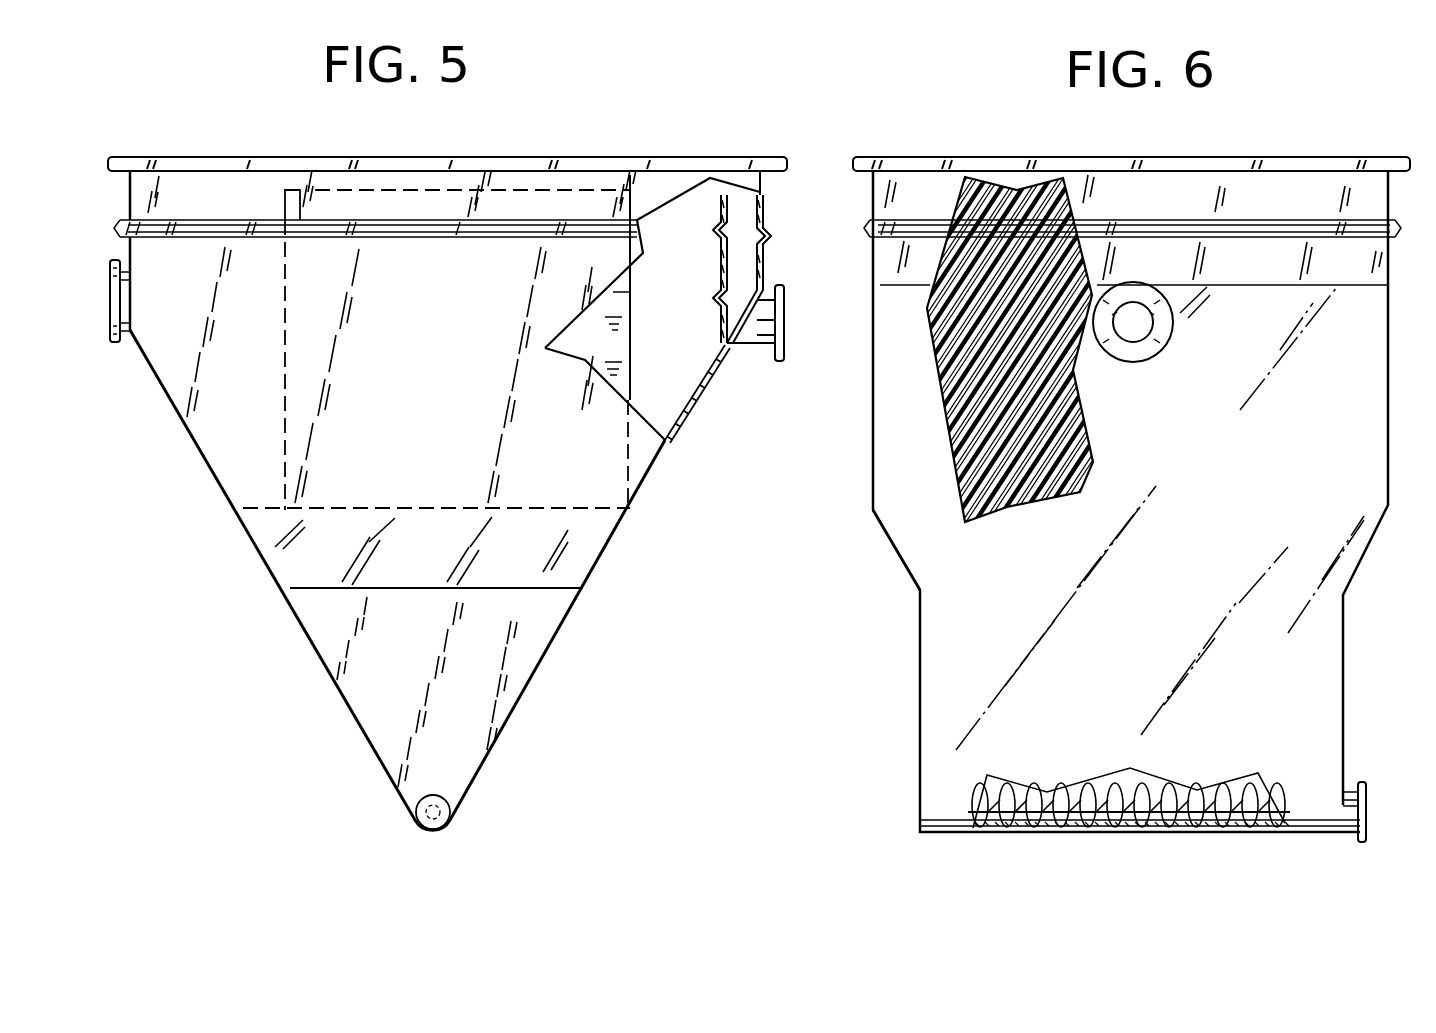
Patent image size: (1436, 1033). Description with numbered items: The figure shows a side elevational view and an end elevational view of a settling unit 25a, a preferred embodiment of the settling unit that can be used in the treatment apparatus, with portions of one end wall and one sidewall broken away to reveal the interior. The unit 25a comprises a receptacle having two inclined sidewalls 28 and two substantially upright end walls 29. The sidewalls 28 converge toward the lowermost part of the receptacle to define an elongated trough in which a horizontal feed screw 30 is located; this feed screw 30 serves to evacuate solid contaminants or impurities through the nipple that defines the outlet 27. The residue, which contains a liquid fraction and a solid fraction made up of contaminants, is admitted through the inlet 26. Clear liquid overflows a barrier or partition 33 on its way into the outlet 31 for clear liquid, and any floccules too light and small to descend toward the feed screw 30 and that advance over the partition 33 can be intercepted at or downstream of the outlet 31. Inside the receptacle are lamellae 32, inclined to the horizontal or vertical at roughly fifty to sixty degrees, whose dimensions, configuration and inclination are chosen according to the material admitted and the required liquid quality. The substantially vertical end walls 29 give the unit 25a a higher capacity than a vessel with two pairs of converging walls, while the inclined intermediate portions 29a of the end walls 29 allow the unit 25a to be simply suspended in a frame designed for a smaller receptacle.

In FIG. 5, the settling unit 25a is at (302, 796).
In FIG. 6, the settling unit 25a is at (882, 819).
In FIG. 5, the inlet 26 is at (110, 314).
In FIG. 6, the outlet 27 is at (1377, 806).
In FIG. 5, the inclined sidewall 28 is at (285, 601).
In FIG. 6, the inclined sidewall 28 is at (1133, 462).
In FIG. 5, the end wall 29 is at (436, 342).
In FIG. 6, the end wall 29 is at (914, 667).
In FIG. 6, the inclined intermediate portion 29a is at (892, 536).
In FIG. 6, the feed screw 30 is at (1110, 812).
In FIG. 5, the outlet for clear liquid 31 is at (788, 330).
In FIG. 6, the outlet for clear liquid 31 is at (1135, 326).
In FIG. 5, the lamellae 32 is at (607, 341).
In FIG. 6, the lamellae 32 is at (1020, 240).
In FIG. 5, the partition 33 is at (714, 205).